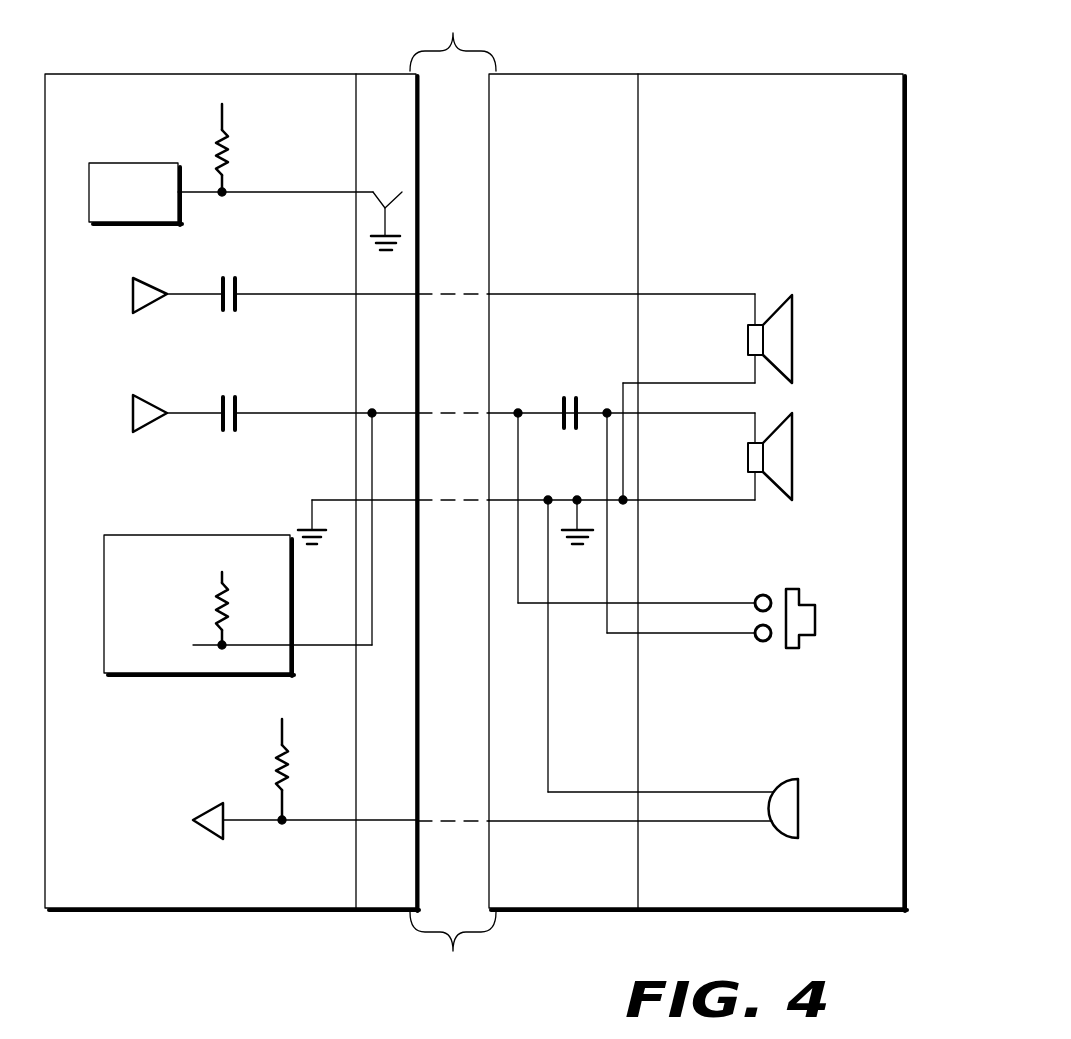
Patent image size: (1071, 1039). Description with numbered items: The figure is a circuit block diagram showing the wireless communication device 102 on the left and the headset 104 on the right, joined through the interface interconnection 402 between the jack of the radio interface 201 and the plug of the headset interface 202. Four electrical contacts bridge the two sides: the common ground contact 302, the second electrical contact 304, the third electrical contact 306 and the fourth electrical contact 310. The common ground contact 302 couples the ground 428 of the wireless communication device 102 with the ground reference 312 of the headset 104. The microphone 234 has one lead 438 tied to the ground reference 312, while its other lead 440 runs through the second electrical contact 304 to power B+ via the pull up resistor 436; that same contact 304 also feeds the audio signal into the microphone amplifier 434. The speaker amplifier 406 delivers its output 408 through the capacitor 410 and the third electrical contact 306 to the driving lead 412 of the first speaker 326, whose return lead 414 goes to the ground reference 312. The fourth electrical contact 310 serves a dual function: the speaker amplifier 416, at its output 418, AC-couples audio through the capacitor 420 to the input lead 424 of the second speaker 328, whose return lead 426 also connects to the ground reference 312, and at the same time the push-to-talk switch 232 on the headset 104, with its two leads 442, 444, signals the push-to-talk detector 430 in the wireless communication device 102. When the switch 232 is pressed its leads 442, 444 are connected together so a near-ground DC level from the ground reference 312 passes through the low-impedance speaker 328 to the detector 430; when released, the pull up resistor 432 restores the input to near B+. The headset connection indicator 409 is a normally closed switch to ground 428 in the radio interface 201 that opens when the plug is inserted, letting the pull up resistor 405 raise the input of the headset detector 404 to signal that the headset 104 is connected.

The wireless communication device 102 is at (45, 74).
The headset 104 is at (868, 74).
The radio interface 201 is at (372, 74).
The headset interface 202 is at (542, 74).
The interface interconnection 402 is at (453, 497).
The headset detector 404 is at (89, 163).
The pull up resistor 405 is at (228, 146).
The speaker amplifier 406 is at (148, 282).
The output 408 is at (169, 292).
The headset connection indicator 409 is at (381, 186).
The capacitor 410 is at (237, 278).
The speaker amplifier 416 is at (134, 397).
The output 418 is at (177, 414).
The capacitor 420 is at (237, 396).
The ground 428 is at (347, 504).
The push-to-talk detector 430 is at (193, 535).
The pull up resistor 432 is at (229, 584).
The microphone amplifier 434 is at (215, 803).
The pull up resistor 436 is at (290, 757).
The third electrical contact 306 is at (447, 262).
The fourth electrical contact 310 is at (450, 382).
The common ground contact 302 is at (432, 503).
The second electrical contact 304 is at (450, 792).
The ground reference 312 is at (580, 497).
The driving lead 412 is at (690, 292).
The return lead 414 is at (666, 382).
The first speaker 326 is at (778, 311).
The input lead 424 is at (666, 415).
The second speaker 328 is at (795, 418).
The return lead 426 is at (738, 504).
The lead 442 is at (680, 600).
The lead 444 is at (678, 637).
The push-to-talk switch 232 is at (800, 590).
The lead 438 is at (692, 791).
The lead 440 is at (697, 823).
The microphone 234 is at (800, 793).